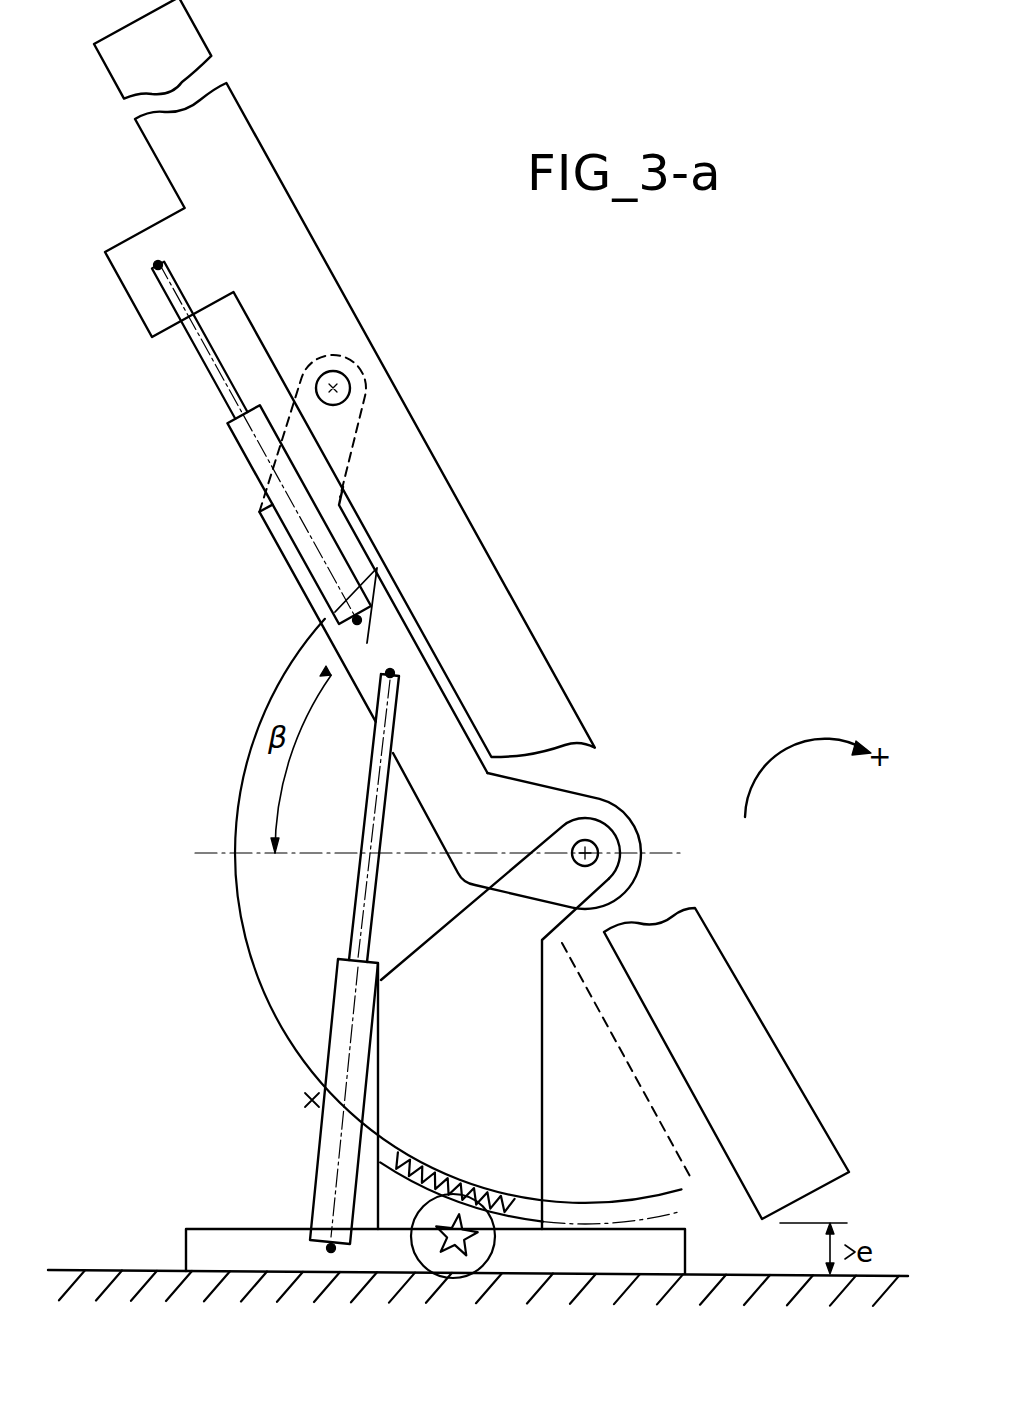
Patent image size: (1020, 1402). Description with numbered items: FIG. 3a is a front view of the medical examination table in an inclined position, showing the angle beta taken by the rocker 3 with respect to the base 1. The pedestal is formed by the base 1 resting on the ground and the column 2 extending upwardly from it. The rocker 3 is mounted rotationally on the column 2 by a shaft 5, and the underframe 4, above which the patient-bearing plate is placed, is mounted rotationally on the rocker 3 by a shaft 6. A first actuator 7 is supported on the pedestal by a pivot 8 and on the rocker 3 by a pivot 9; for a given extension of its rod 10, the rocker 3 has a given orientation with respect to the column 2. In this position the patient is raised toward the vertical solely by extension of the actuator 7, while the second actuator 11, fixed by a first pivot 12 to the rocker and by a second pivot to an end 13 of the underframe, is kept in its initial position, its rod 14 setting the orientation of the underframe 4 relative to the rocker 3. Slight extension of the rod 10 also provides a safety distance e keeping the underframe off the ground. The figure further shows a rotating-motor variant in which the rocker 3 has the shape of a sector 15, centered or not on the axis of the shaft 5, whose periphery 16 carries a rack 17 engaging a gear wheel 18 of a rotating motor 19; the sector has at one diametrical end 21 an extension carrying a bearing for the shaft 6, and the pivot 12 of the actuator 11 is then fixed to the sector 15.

The base 1 is at (668, 1266).
The column 2 is at (543, 1077).
The rocker 3 is at (556, 803).
The underframe 4 is at (756, 1042).
The shaft 5 is at (598, 847).
The shaft 6 is at (340, 382).
The first actuator 7 is at (332, 1050).
The pivot 8 is at (329, 1254).
The pivot 9 is at (393, 674).
The rod 10 is at (374, 868).
The actuator 11 is at (246, 453).
The first pivot 12 is at (359, 619).
The end of the underframe 13 is at (160, 264).
The rod 14 is at (212, 356).
The sector 15 is at (250, 930).
The periphery 16 is at (311, 1103).
The rack 17 is at (412, 1160).
The gear wheel 18 is at (456, 1250).
The rotating motor 19 is at (494, 1252).
The diametrical end 21 is at (283, 553).